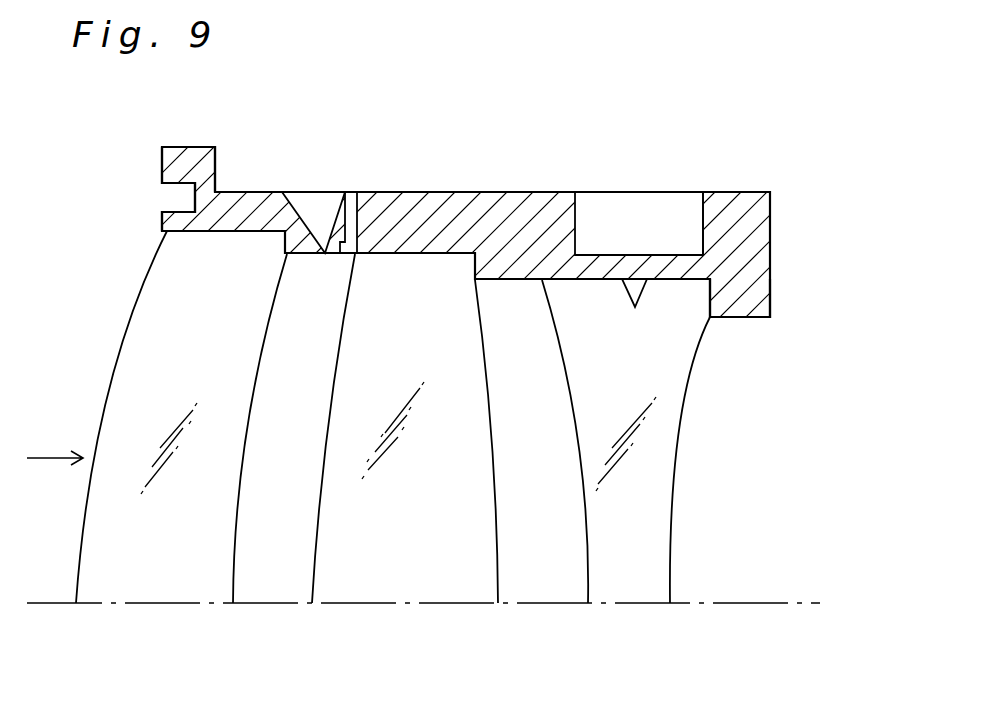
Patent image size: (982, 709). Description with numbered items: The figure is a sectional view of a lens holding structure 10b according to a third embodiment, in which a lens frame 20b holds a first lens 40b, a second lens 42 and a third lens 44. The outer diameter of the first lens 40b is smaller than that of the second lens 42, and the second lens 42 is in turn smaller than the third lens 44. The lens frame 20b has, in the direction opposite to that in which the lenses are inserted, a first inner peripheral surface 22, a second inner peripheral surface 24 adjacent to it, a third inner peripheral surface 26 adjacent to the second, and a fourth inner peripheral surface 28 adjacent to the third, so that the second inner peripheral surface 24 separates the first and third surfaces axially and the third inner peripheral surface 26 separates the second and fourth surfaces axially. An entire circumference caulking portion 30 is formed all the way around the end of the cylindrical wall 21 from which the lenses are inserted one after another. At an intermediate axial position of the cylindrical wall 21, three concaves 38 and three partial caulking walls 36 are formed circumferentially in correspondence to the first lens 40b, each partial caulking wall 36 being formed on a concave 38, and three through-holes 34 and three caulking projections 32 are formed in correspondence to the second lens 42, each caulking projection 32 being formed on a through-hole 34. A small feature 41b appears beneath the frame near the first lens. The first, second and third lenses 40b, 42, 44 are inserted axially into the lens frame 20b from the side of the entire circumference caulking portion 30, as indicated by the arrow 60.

The lens holding structure 10b is at (743, 146).
The lens frame 20b is at (771, 220).
The cylindrical wall 21 is at (475, 212).
The first inner peripheral surface 22 is at (738, 318).
The second inner peripheral surface 24 is at (510, 283).
The third inner peripheral surface 26 is at (303, 260).
The fourth inner peripheral surface 28 is at (197, 237).
The entire circumference caulking portion 30 is at (178, 209).
The caulking projection 32 is at (352, 212).
The through-hole 34 is at (312, 207).
The partial caulking wall 36 is at (659, 256).
The concave 38 is at (598, 210).
The first lens 40b is at (632, 583).
The projection 41b is at (638, 288).
The second lens 42 is at (402, 583).
The third lens 44 is at (152, 585).
The arrow 60 is at (44, 460).